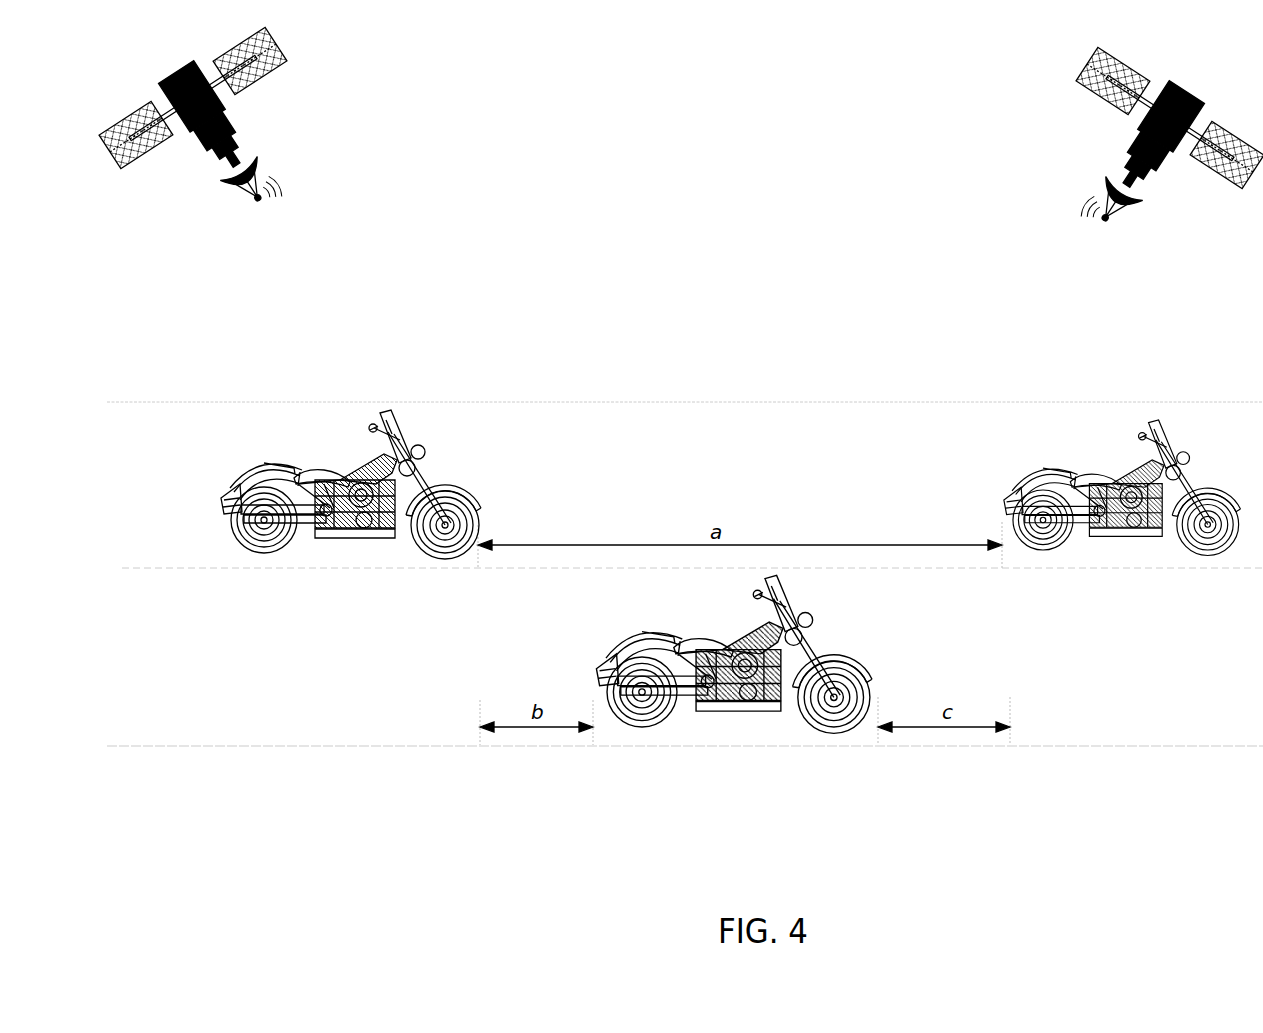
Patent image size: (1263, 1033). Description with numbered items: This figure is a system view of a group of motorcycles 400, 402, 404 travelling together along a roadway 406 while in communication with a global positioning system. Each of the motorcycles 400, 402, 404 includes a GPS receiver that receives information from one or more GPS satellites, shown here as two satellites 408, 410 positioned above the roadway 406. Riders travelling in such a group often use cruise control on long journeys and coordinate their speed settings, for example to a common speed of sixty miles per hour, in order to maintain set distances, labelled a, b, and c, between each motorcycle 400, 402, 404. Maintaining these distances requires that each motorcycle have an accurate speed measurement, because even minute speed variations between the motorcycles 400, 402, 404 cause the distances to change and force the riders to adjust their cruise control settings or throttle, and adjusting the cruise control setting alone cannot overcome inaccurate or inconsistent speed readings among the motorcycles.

The motorcycle 400 is at (254, 462).
The motorcycle 402 is at (1041, 466).
The motorcycle 404 is at (648, 640).
The roadway 406 is at (242, 747).
The GPS satellite 408 is at (245, 134).
The GPS satellite 410 is at (1122, 154).